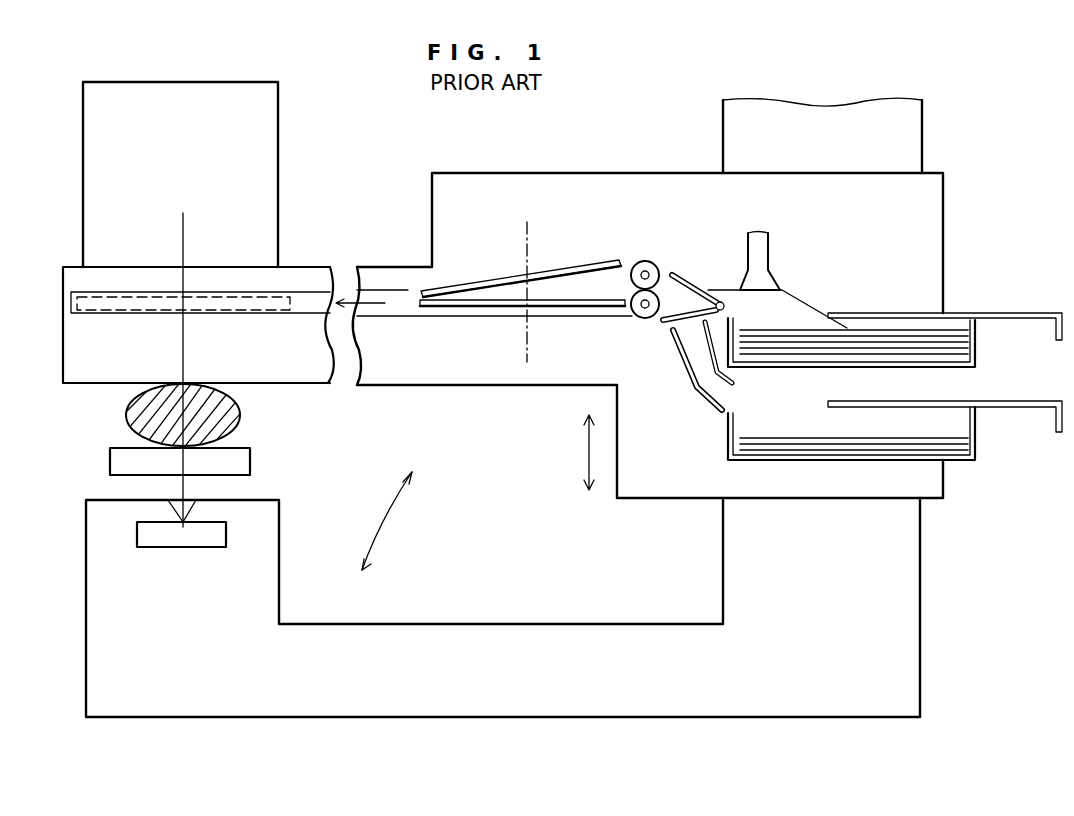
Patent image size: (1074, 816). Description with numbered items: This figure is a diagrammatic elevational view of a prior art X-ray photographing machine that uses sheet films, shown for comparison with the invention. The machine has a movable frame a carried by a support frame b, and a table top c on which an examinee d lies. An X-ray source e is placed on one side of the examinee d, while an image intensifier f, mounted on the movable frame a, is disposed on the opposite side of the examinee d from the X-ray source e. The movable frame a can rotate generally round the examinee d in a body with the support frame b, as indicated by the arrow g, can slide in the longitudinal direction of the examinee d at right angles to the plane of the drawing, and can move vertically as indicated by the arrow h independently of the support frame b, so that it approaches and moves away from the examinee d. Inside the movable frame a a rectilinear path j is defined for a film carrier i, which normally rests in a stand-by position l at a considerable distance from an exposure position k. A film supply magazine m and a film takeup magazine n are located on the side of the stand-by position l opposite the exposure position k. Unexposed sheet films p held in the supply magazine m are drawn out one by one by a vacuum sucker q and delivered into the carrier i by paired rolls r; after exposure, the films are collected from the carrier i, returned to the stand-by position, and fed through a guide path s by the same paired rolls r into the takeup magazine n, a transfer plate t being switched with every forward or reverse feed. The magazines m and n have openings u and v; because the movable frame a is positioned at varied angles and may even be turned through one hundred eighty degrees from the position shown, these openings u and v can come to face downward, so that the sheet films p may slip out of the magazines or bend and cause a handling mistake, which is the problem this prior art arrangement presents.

The movable frame a is at (641, 176).
The support frame b is at (920, 620).
The table top c is at (250, 462).
The examinee d is at (236, 426).
The X-ray source e is at (236, 532).
The image intensifier f is at (278, 230).
The arrow g is at (395, 520).
The arrow h is at (587, 433).
The film carrier i is at (268, 320).
The rectilinear path j is at (400, 311).
The exposure position k is at (186, 246).
The stand-by position l is at (531, 330).
The film supply magazine m is at (965, 313).
The film takeup magazine n is at (968, 401).
The sheet films p is at (813, 302).
The vacuum sucker q is at (763, 262).
The paired rolls r is at (657, 264).
The guide path s is at (700, 388).
The transfer plate t is at (672, 330).
The opening u is at (773, 321).
The opening v is at (766, 422).